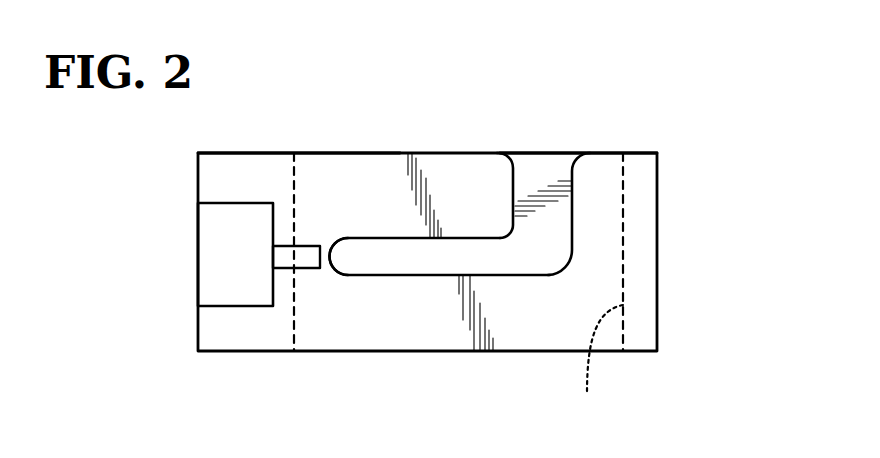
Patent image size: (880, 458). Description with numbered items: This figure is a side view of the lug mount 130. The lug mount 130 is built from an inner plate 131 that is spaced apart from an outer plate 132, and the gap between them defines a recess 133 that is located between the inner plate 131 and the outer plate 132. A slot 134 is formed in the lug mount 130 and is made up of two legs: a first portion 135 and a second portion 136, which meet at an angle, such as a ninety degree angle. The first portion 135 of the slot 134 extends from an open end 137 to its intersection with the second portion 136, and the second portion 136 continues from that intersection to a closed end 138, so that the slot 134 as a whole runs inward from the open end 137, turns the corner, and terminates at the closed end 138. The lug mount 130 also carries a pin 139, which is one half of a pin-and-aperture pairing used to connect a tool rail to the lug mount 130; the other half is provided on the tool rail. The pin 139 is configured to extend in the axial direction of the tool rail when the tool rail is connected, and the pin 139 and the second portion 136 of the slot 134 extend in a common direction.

The lug mount 130 is at (733, 106).
The inner plate 131 is at (562, 153).
The outer plate 132 is at (313, 153).
The recess 133 is at (598, 364).
The slot 134 is at (513, 190).
The first portion 135 is at (538, 213).
The second portion 136 is at (375, 256).
The open end 137 is at (544, 134).
The closed end 138 is at (327, 263).
The pin 139 is at (282, 268).